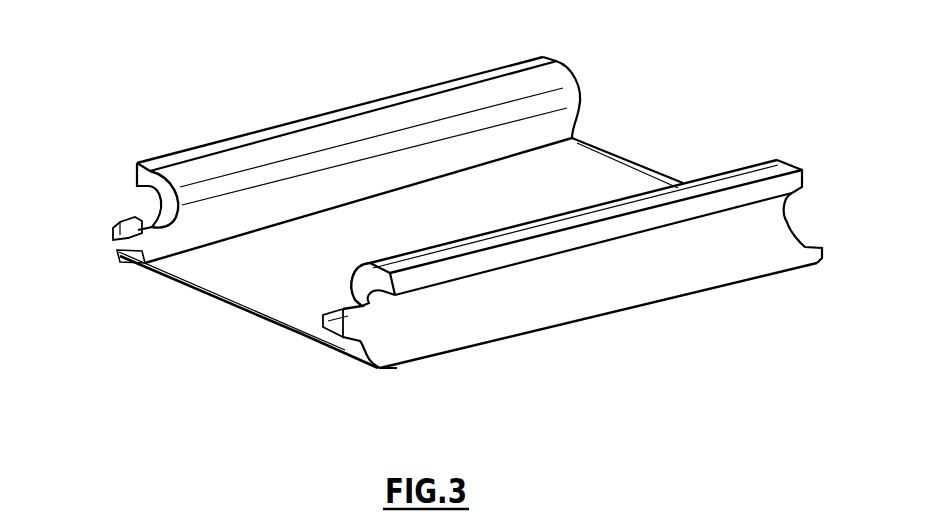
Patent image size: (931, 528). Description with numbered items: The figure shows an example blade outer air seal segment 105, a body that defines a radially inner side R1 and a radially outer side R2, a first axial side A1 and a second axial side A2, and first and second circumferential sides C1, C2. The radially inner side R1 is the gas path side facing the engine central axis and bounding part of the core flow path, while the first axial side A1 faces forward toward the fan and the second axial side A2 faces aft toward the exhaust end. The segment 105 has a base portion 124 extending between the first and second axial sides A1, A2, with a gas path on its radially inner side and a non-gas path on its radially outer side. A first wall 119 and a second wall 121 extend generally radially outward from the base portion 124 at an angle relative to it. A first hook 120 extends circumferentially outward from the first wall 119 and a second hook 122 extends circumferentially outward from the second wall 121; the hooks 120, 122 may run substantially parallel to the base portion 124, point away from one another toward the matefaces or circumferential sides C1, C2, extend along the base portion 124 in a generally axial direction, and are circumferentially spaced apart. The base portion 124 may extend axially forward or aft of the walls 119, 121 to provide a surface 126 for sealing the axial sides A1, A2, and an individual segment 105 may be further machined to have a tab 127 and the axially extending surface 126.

The BOAS segment 105 is at (683, 68).
The first hook 120 is at (195, 153).
The second hook 122 is at (730, 197).
The surface 126 is at (647, 167).
The first wall 119 is at (145, 243).
The base portion 124 is at (225, 268).
The tab 127 is at (343, 339).
The second wall 121 is at (363, 341).
The first axial side A1 is at (232, 305).
The second axial side A2 is at (805, 238).
The radially inner side R1 is at (307, 340).
The radially outer side R2 is at (283, 310).
The first circumferential side C1 is at (381, 369).
The second circumferential side C2 is at (117, 237).